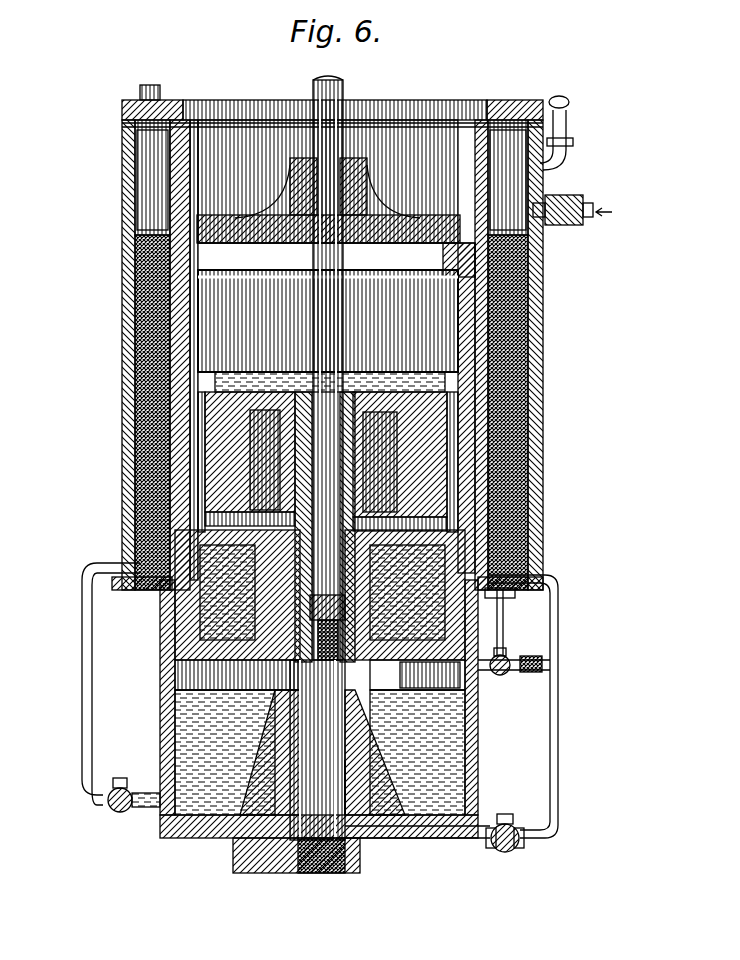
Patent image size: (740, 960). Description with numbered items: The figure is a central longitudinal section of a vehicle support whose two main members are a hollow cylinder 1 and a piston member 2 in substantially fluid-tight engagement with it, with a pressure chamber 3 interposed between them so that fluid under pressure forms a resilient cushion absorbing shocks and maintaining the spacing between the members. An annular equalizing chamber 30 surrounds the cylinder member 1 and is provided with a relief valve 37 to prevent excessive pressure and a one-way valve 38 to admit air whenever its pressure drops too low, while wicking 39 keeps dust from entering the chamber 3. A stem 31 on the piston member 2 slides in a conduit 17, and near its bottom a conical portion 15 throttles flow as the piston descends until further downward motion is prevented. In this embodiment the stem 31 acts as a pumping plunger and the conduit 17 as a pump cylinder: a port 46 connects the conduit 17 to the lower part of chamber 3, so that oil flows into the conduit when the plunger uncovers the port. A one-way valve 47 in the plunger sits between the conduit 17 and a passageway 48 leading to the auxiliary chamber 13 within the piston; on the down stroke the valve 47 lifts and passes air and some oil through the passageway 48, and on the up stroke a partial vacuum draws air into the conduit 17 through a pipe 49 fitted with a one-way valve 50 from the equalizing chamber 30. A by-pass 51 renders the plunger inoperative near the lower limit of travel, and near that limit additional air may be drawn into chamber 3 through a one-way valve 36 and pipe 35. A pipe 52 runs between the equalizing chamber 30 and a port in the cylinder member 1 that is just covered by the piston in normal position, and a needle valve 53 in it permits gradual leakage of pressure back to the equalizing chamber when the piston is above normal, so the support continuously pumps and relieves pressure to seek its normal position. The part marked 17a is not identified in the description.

The hollow cylinder 1 is at (470, 736).
The piston member 2 is at (520, 445).
The pressure chamber 3 is at (455, 690).
The auxiliary chamber 13 is at (430, 325).
The conical portion 15 is at (275, 760).
The conduit 17 is at (315, 790).
The piston ring 17a is at (445, 378).
The equalizing chamber 30 is at (140, 190).
The stem 31 is at (330, 350).
The pipe 35 is at (85, 670).
The one-way valve 36 is at (122, 786).
The relief valve 37 is at (568, 132).
The one-way valve 38 is at (576, 225).
The wicking 39 is at (470, 393).
The port 46 is at (290, 700).
The one-way valve 47 is at (300, 628).
The passageway 48 is at (298, 588).
The pipe 49 is at (405, 835).
The one-way valve 50 is at (512, 848).
The by-pass 51 is at (345, 760).
The pipe 52 is at (505, 612).
The needle valve 53 is at (540, 668).